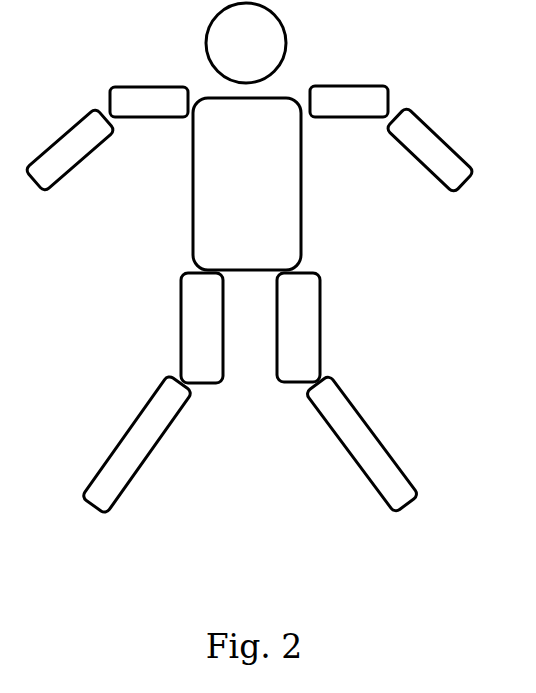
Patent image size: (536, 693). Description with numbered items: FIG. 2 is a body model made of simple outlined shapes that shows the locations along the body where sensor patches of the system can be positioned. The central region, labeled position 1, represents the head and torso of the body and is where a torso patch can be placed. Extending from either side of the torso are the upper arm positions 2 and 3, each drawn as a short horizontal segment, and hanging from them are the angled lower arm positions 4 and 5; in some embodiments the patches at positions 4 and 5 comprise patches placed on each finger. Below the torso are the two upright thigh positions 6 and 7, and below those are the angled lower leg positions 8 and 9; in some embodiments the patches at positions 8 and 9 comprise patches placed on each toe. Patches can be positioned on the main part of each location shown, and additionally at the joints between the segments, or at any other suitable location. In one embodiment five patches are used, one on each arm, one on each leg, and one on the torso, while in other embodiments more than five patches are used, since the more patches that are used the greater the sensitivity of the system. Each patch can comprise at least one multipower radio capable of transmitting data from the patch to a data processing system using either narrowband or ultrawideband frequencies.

The torso position 1 is at (247, 136).
The upper arm position 2 is at (149, 102).
The upper arm position 3 is at (349, 101).
The forearm and hand position 4 is at (70, 150).
The forearm and hand position 5 is at (430, 150).
The thigh position 6 is at (202, 328).
The thigh position 7 is at (298, 327).
The lower leg and foot position 8 is at (136, 445).
The lower leg and foot position 9 is at (362, 444).